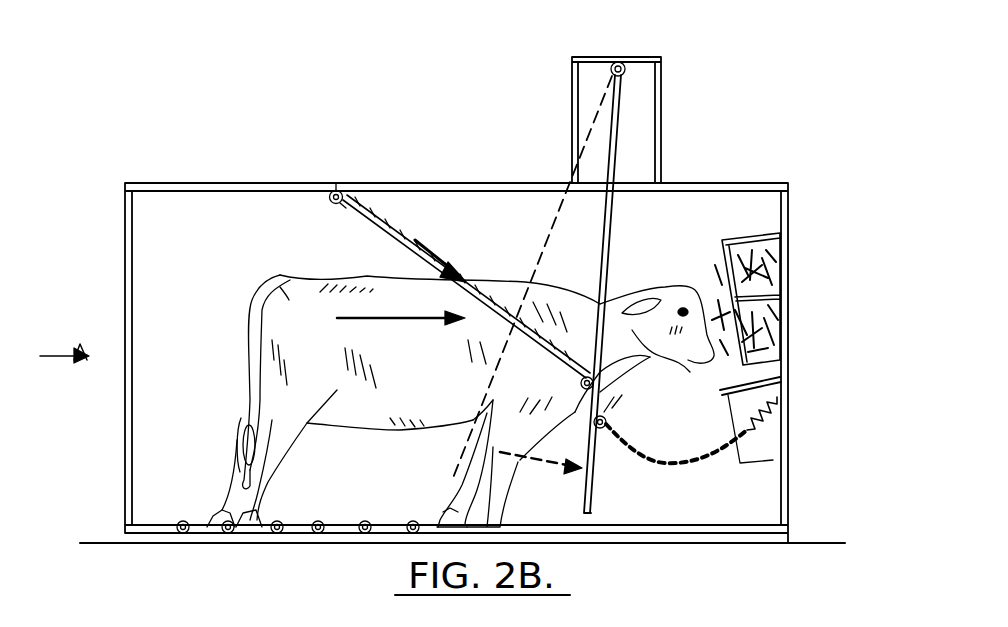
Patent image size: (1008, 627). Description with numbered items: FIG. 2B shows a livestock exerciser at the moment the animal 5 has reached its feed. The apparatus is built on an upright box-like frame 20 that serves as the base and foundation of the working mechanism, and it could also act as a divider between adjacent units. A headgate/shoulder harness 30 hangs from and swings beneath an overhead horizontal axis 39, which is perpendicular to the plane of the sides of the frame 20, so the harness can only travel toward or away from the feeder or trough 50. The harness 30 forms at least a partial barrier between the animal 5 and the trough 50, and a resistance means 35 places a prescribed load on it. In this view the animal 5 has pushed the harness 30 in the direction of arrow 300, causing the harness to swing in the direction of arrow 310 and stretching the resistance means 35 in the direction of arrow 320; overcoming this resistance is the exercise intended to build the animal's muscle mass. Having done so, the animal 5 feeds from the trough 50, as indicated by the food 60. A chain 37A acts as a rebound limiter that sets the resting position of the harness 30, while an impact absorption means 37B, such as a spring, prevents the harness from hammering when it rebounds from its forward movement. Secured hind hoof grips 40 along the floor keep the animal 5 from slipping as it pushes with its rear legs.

The livestock animal 5 is at (280, 275).
The upright box-like frame 20 is at (205, 183).
The headgate/shoulder harness 30 is at (611, 214).
The resistance means 35 is at (358, 224).
The overhead horizontal axis 39 is at (622, 62).
The hind hoof grips 40 is at (228, 535).
The feeder or trough 50 is at (790, 267).
The food 60 is at (680, 383).
The chain 37A is at (665, 462).
The impact absorption means 37B is at (788, 420).
The arrow 300 is at (337, 320).
The arrow 310 is at (545, 465).
The arrow 320 is at (452, 240).